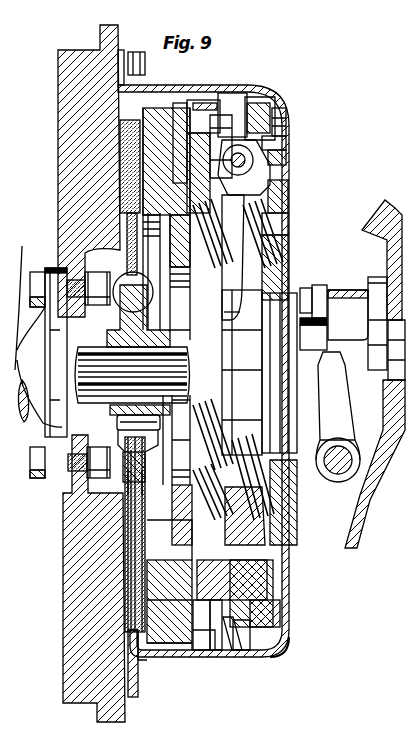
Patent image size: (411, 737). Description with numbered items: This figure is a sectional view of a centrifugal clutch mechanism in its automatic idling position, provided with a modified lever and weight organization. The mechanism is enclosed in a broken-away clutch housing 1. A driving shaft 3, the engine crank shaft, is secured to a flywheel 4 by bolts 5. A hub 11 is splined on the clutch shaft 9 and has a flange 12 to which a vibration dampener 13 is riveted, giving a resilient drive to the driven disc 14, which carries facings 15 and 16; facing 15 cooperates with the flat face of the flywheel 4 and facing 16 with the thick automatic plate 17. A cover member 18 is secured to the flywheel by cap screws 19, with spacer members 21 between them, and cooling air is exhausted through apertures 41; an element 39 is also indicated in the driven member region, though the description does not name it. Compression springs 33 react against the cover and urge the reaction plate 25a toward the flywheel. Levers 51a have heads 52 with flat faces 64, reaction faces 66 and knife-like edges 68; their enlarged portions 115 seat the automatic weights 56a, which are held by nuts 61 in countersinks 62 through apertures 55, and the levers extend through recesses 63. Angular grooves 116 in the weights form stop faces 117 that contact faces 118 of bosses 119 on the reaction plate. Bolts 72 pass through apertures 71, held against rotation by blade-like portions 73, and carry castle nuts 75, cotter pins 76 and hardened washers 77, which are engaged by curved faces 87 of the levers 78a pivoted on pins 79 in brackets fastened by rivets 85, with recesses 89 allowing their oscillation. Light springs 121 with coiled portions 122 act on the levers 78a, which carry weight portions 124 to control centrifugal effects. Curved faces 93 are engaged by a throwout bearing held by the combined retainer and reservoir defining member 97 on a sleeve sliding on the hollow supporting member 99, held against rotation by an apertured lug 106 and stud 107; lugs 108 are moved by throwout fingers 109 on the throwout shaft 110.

The clutch housing 1 is at (386, 248).
The driving shaft 3 is at (38, 328).
The flywheel 4 is at (70, 127).
The bolts 5 is at (52, 480).
The clutch shaft 9 is at (213, 388).
The hub 11 is at (85, 346).
The flange 12 is at (128, 328).
The vibration dampener 13 is at (115, 282).
The driven disc 14 is at (132, 510).
The facing 15 is at (145, 660).
The facing 16 is at (141, 672).
The automatic plate 17 is at (128, 548).
The cover member 18 is at (218, 371).
The cap screws 19 is at (137, 55).
The spacer members 21 is at (121, 55).
The reaction plate 25a is at (202, 100).
The compression springs 33 is at (238, 359).
The friction facing 39 is at (125, 600).
The apertures 41 is at (165, 657).
The levers 51a is at (198, 640).
The heads 52 is at (125, 605).
The apertures 55 is at (142, 530).
The automatic weights 56a is at (265, 527).
The nuts 61 is at (258, 590).
The countersinks 62 is at (268, 622).
The recesses 63 is at (200, 660).
The flat faces 64 is at (125, 574).
The reaction faces 66 is at (292, 545).
The knife-like edges 68 is at (123, 625).
The apertures 71 is at (193, 105).
The bolts 72 is at (216, 115).
The blade-like portions 73 is at (178, 108).
The castle nuts 75 is at (265, 103).
The cotter pins 76 is at (288, 127).
The hardened washers 77 is at (286, 138).
The levers 78a is at (278, 252).
The pins 79 is at (286, 157).
The rivets 85 is at (290, 196).
The curved faces 87 is at (240, 115).
The recesses 89 is at (252, 190).
The curved faces 93 is at (232, 302).
The combined retainer and reservoir defining member 97 is at (270, 357).
The hollow supporting member 99 is at (246, 393).
The apertured lug 106 is at (320, 285).
The stud 107 is at (350, 290).
The lugs 108 is at (315, 341).
The throwout fingers 109 is at (346, 393).
The throwout shaft 110 is at (338, 475).
The enlarged portions 115 is at (262, 570).
The angular grooves 116 is at (290, 632).
The stop faces 117 is at (245, 640).
The faces 118 is at (237, 645).
The bosses 119 is at (222, 650).
The springs 121 is at (237, 257).
The coiled portions 122 is at (288, 205).
The weight portions 124 is at (253, 172).